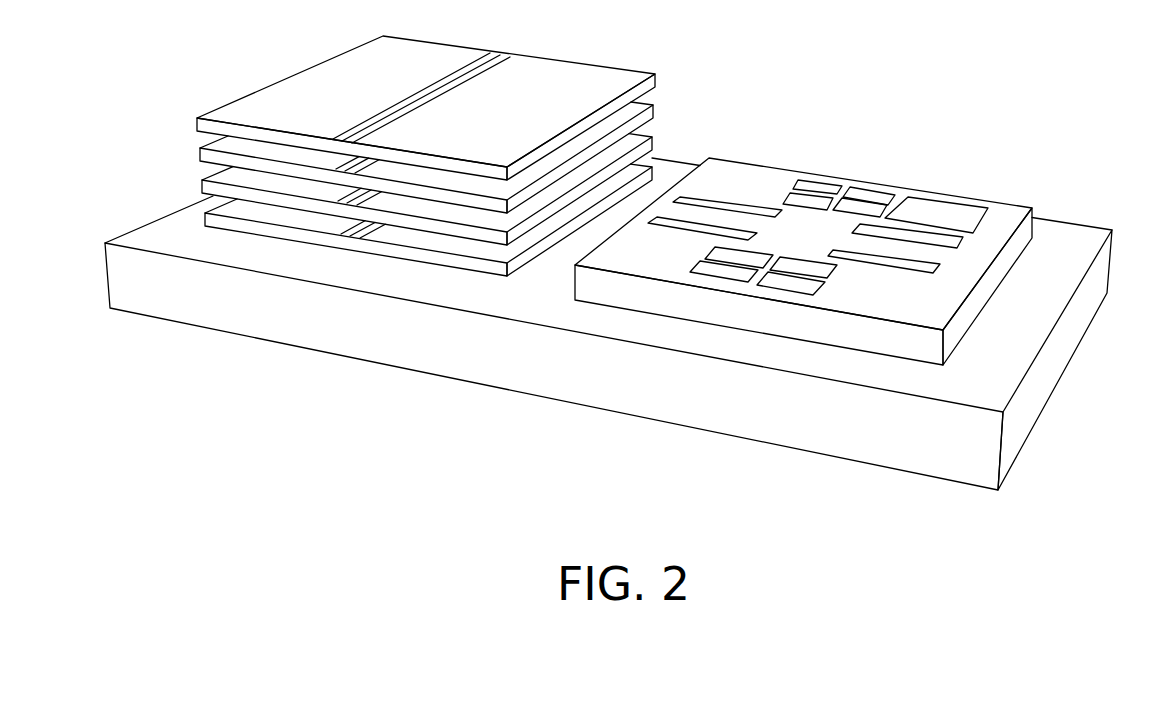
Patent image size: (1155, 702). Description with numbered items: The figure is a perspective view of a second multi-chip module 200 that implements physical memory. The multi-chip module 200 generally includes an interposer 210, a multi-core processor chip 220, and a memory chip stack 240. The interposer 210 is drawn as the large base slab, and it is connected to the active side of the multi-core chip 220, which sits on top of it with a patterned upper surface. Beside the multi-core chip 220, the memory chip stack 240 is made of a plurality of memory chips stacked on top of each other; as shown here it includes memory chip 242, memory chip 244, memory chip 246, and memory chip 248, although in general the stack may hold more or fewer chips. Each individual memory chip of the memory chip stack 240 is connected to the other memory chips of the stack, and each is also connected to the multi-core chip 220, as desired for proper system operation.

The multi-chip module 200 is at (432, 553).
The interposer 210 is at (692, 405).
The multi-core processor chip 220 is at (1030, 225).
The memory chip stack 240 is at (696, 102).
The memory chip 242 is at (203, 223).
The memory chip 244 is at (201, 188).
The memory chip 246 is at (199, 157).
The memory chip 248 is at (197, 125).